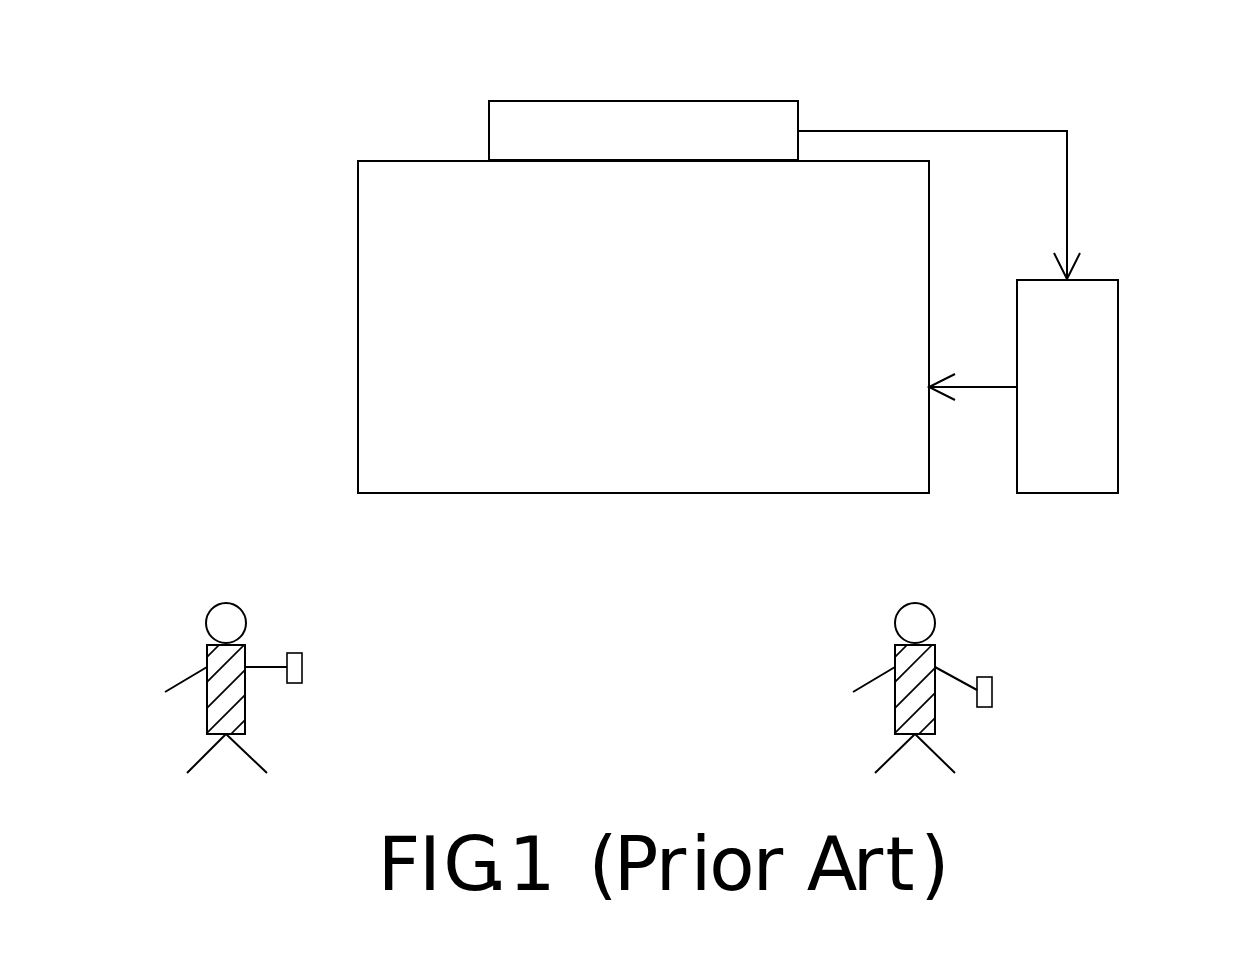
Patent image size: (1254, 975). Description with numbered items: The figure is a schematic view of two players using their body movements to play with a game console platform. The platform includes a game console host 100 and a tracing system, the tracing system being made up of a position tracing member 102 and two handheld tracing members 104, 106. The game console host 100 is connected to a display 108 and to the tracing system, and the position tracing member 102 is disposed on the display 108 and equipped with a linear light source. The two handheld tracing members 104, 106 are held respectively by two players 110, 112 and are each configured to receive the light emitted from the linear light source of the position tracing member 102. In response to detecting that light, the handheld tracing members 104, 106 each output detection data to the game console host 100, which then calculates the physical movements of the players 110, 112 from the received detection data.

The game console host 100 is at (1103, 398).
The position tracing member 102 is at (630, 113).
The handheld tracing member 104 is at (302, 667).
The handheld tracing member 106 is at (992, 690).
The display 108 is at (372, 352).
The player 110 is at (240, 621).
The player 112 is at (930, 621).